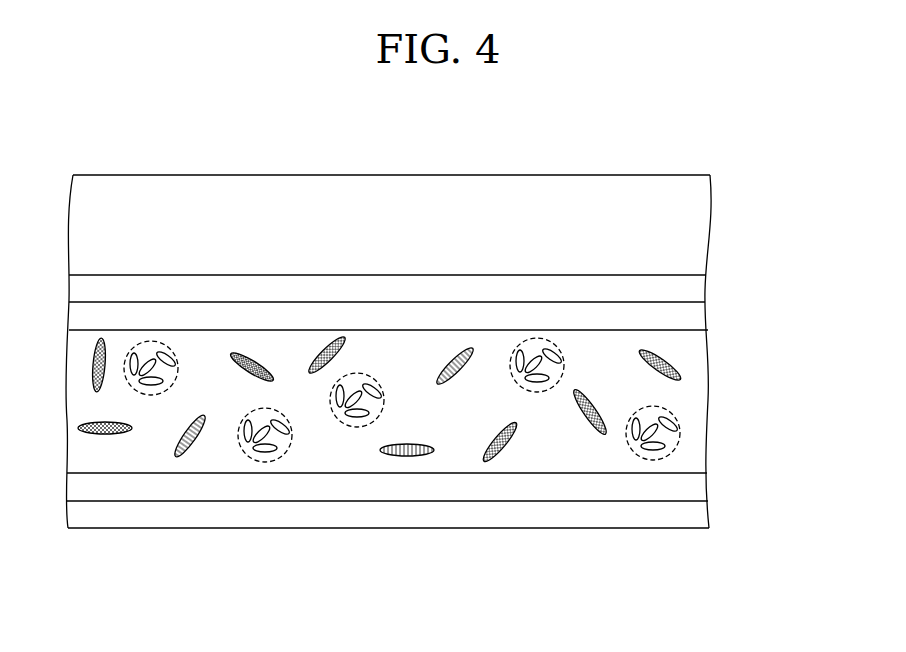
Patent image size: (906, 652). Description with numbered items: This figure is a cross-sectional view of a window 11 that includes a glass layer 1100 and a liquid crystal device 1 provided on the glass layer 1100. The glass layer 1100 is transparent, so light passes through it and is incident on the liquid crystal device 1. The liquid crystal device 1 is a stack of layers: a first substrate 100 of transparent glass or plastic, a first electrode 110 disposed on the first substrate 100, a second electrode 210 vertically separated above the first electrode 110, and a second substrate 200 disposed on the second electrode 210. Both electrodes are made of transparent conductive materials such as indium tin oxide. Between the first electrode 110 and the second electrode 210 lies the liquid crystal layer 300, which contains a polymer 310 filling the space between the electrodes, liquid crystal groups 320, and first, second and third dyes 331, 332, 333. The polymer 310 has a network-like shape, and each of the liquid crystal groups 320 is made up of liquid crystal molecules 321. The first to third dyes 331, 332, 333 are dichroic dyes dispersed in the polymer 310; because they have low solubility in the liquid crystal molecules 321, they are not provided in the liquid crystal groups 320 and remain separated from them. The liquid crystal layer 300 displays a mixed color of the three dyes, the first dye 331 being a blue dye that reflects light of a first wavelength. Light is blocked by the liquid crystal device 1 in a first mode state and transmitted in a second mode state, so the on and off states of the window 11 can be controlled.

The liquid crystal device 1 is at (442, 402).
The window 11 is at (647, 113).
The first substrate 100 is at (695, 515).
The first electrode 110 is at (695, 487).
The second substrate 200 is at (695, 290).
The second electrode 210 is at (695, 319).
The liquid crystal layer 300 is at (381, 421).
The polymer 310 is at (219, 458).
The liquid crystal groups 320 is at (276, 401).
The liquid crystal molecules 321 is at (278, 325).
The first dye 331 is at (407, 458).
The second dye 332 is at (507, 446).
The third dye 333 is at (584, 488).
The glass layer 1100 is at (695, 225).